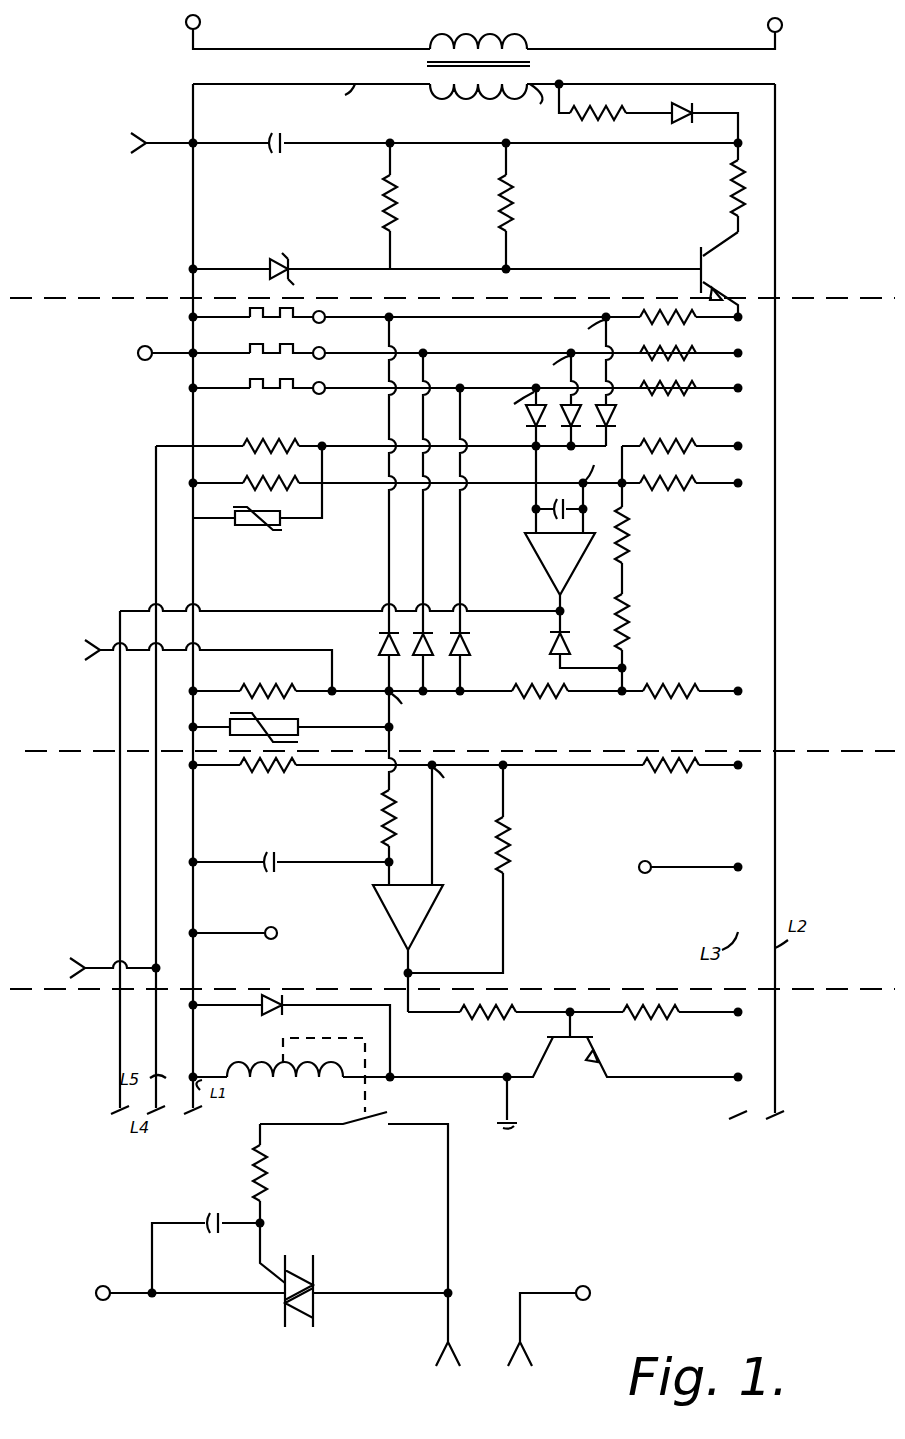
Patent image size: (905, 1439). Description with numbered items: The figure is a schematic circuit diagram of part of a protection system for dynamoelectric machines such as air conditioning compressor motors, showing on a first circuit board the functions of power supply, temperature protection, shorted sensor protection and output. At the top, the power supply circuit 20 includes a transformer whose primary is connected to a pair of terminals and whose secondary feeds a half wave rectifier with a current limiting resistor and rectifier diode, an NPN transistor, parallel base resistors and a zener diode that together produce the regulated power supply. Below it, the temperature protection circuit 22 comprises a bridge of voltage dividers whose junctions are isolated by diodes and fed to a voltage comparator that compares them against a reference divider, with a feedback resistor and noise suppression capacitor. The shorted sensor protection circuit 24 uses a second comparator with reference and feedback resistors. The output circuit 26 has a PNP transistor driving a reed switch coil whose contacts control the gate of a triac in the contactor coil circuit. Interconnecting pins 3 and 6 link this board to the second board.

The power supply circuit 20 is at (165, 207).
The sensing and comparator section 22 is at (130, 435).
The shorted sensor protection circuit 24 is at (118, 850).
The output circuit 26 is at (93, 1047).
The interconnecting pin 3 is at (192, 665).
The interconnecting pin 6 is at (104, 968).